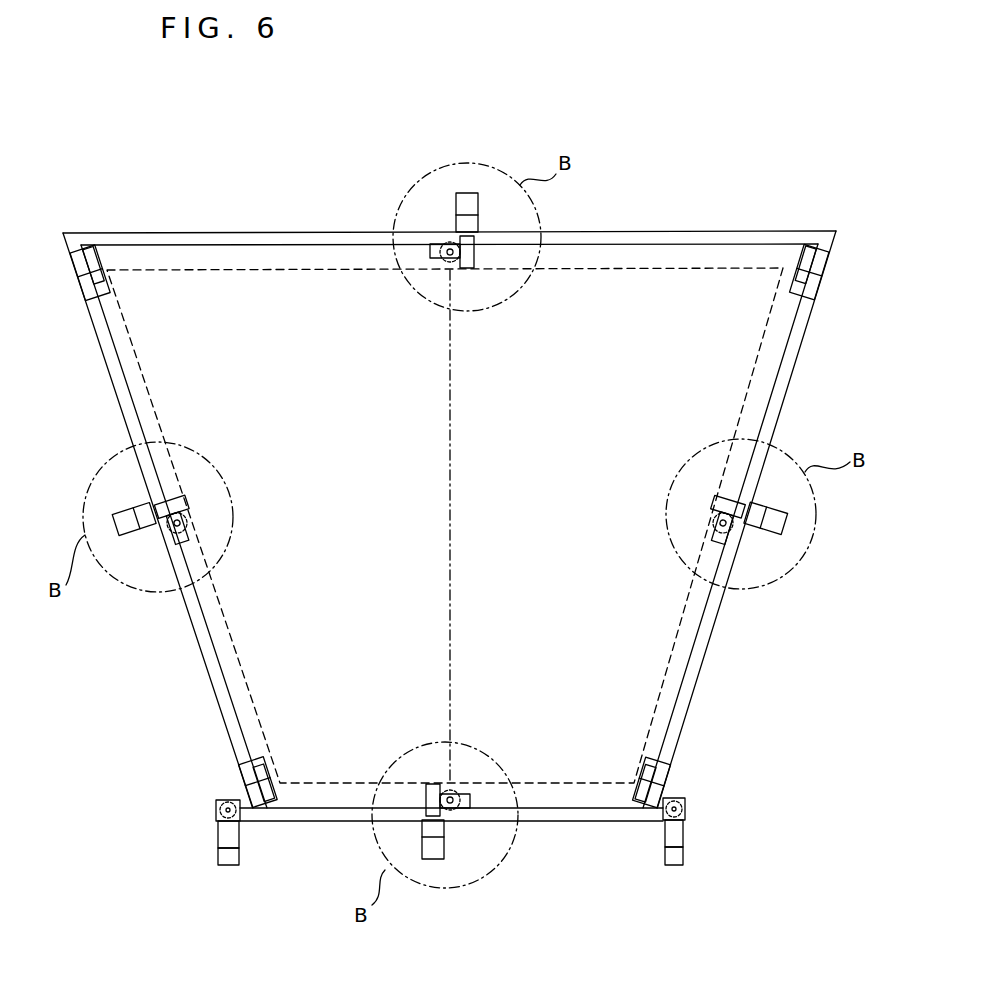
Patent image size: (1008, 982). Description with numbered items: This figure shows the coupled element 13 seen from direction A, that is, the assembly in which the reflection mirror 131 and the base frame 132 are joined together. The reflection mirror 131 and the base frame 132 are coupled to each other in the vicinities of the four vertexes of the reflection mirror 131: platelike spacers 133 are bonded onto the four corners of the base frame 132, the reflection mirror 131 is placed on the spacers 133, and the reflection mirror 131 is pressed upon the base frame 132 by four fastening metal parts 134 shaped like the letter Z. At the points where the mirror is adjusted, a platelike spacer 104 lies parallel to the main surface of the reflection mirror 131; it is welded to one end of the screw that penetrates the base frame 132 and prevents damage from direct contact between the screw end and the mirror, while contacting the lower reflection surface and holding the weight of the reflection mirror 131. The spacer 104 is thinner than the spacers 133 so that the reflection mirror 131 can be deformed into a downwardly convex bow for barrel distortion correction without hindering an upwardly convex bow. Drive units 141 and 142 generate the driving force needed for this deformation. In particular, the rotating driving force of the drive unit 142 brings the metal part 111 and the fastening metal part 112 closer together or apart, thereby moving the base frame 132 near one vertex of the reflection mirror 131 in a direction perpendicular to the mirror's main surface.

The coupled element 13 is at (253, 226).
The spacer 104 is at (440, 250).
The metal part 111 is at (225, 832).
The fastening metal part 112 is at (225, 840).
The reflection mirror 131 is at (712, 364).
The base frame 132 is at (655, 232).
The spacer 133 is at (105, 290).
The fastening metal part 134 is at (85, 270).
The drive unit 141 is at (467, 195).
The drive unit 142 is at (215, 805).